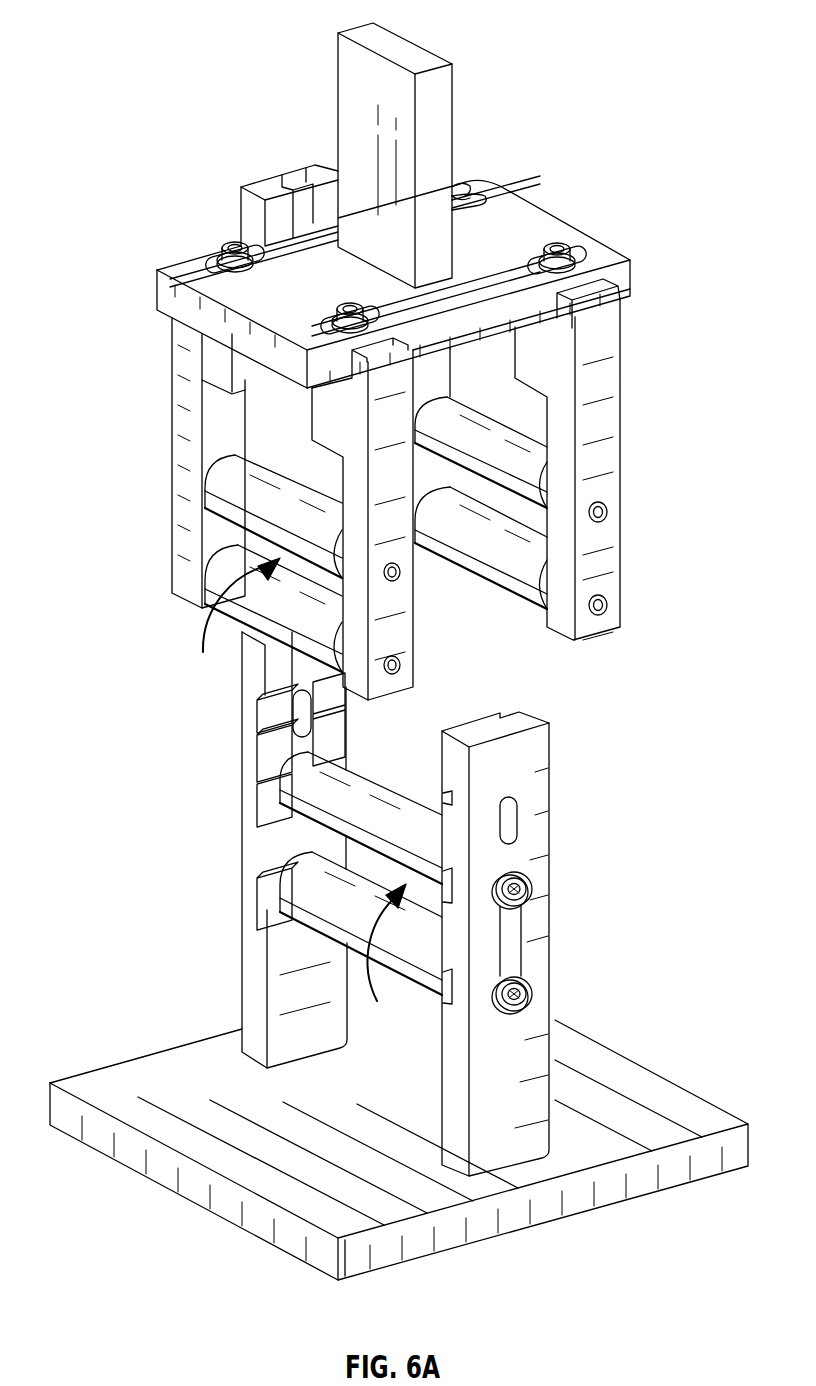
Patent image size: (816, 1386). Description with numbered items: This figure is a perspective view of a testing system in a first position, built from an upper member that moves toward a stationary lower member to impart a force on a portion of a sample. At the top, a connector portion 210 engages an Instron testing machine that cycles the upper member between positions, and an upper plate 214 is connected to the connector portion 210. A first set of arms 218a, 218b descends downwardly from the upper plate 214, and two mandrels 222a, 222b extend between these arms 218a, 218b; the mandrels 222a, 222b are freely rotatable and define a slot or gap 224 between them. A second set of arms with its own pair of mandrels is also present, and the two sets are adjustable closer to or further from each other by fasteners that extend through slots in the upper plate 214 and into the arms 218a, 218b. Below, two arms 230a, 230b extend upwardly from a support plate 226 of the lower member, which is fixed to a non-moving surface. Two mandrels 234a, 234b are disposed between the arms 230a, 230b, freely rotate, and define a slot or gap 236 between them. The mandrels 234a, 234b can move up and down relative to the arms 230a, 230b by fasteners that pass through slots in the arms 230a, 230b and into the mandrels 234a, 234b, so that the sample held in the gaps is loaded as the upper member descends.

The connector portion 210 is at (452, 128).
The upper plate 214 is at (530, 236).
The arm 218a is at (187, 400).
The arm 218b is at (313, 400).
The mandrel 222a is at (217, 510).
The mandrel 222b is at (217, 592).
The slot or gap 224 is at (229, 635).
The support plate 226 is at (102, 1140).
The arm 230a is at (243, 800).
The arm 230b is at (525, 743).
The mandrel 234a is at (362, 790).
The mandrel 234b is at (310, 883).
The slot or gap 236 is at (382, 970).